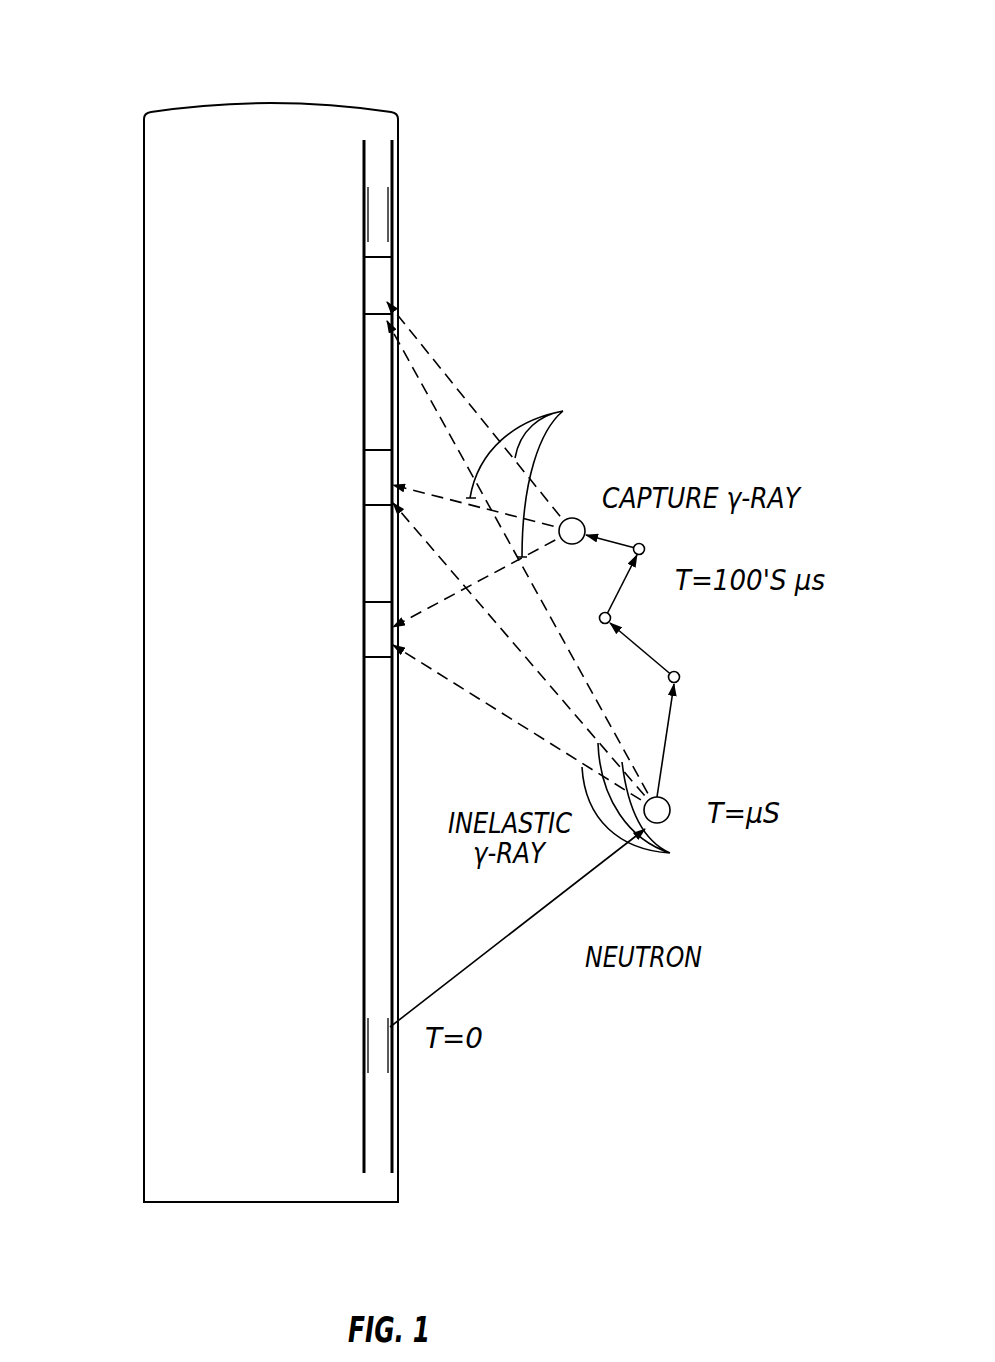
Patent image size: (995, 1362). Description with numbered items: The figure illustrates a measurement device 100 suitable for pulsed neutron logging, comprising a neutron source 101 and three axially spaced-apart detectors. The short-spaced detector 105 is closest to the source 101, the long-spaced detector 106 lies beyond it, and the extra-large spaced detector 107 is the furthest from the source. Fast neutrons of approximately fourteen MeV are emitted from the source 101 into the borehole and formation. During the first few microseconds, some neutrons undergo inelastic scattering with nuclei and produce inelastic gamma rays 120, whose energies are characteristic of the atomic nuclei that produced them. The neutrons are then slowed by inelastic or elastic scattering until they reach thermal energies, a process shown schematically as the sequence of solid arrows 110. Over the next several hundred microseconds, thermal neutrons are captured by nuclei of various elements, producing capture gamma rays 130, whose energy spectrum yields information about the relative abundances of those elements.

The measurement device 100 is at (136, 50).
The neutron source 101 is at (162, 847).
The short-spaced detector 105 is at (378, 625).
The long-spaced detector 106 is at (378, 473).
The extra-large spaced detector 107 is at (377, 287).
The sequence of solid arrows 110 is at (617, 598).
The inelastic gamma rays 120 is at (670, 853).
The capture gamma rays 130 is at (563, 411).